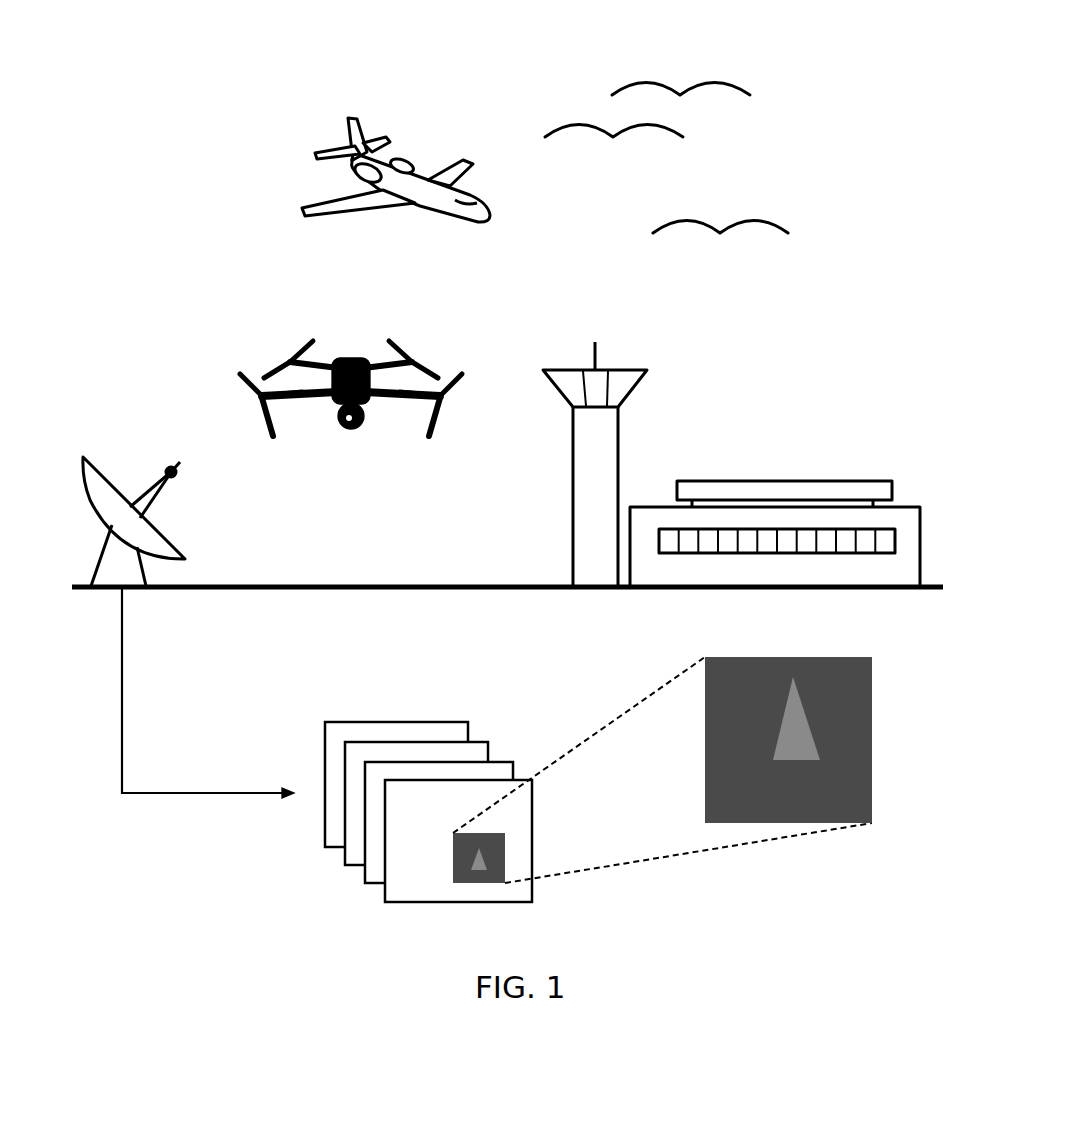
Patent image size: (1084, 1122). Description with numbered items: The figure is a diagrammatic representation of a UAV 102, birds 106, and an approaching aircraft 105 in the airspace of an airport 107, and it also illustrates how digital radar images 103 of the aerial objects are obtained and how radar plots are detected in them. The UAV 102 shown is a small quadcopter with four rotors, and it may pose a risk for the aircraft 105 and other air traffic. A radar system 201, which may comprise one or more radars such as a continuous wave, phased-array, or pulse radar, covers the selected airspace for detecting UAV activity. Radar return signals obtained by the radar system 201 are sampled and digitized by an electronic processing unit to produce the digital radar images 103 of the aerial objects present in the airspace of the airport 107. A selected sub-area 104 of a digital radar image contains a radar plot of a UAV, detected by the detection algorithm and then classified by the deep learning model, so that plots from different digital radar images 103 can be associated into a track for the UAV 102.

The aircraft 105 is at (379, 92).
The birds 106 is at (724, 121).
The UAV 102 is at (338, 310).
The radar system 201 is at (100, 563).
The airport 107 is at (745, 450).
The digital radar images 103 is at (437, 902).
The selected sub-area 104 is at (872, 750).